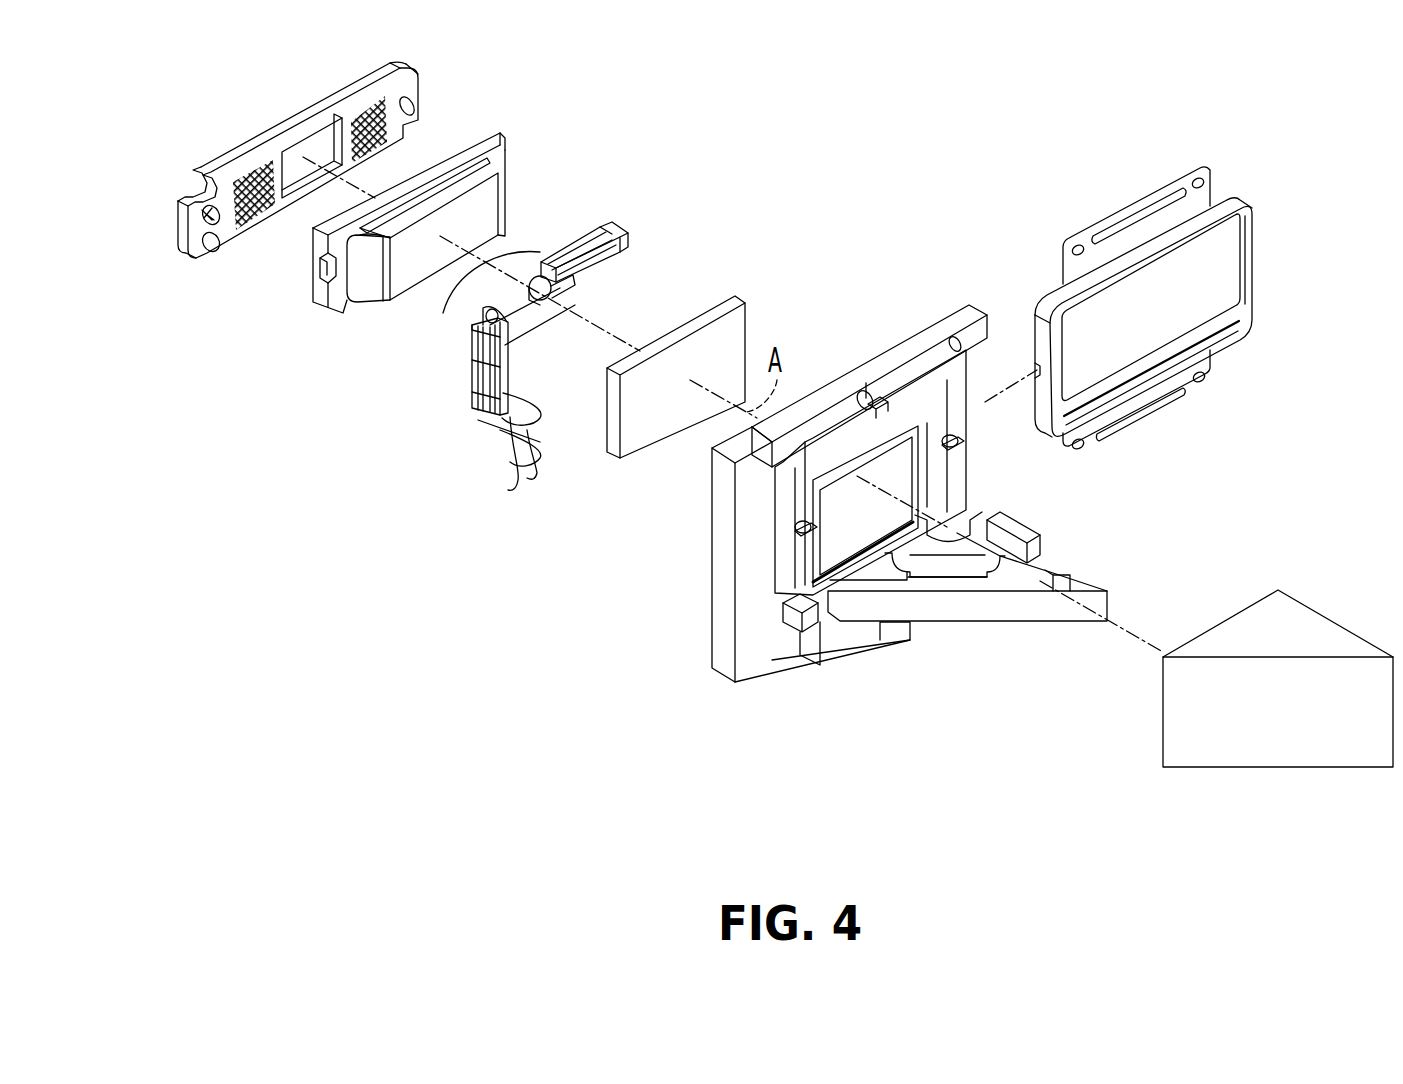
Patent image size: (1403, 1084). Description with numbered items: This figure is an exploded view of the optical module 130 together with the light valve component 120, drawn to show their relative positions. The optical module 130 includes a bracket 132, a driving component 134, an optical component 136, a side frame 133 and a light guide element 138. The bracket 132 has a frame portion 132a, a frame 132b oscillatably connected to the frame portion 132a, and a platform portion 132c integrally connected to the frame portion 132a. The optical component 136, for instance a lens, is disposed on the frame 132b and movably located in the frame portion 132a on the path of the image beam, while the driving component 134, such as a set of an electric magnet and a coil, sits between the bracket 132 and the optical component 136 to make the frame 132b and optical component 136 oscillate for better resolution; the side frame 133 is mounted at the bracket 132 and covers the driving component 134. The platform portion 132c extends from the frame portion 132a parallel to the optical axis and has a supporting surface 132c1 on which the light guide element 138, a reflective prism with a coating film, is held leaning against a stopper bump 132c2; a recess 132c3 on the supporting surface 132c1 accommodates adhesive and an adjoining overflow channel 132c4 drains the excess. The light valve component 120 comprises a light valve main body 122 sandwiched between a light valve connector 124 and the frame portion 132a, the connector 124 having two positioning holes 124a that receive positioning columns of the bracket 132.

The light valve component 120 is at (240, 275).
The light valve main body 122 is at (492, 136).
The light valve connector 124 is at (235, 160).
The positioning hole 124a is at (203, 230).
The driving component 134 is at (473, 332).
The optical component 136 is at (635, 437).
The optical module 130 is at (962, 713).
The bracket 132 is at (810, 824).
The frame portion 132a is at (720, 602).
The frame 132b is at (787, 565).
The platform portion 132c is at (860, 612).
The supporting surface 132c1 is at (1045, 572).
The stopper bump 132c2 is at (1010, 523).
The recess 132c3 is at (952, 557).
The overflow channel 132c4 is at (972, 580).
The side frame 133 is at (1220, 200).
The light guide element 138 is at (1305, 627).